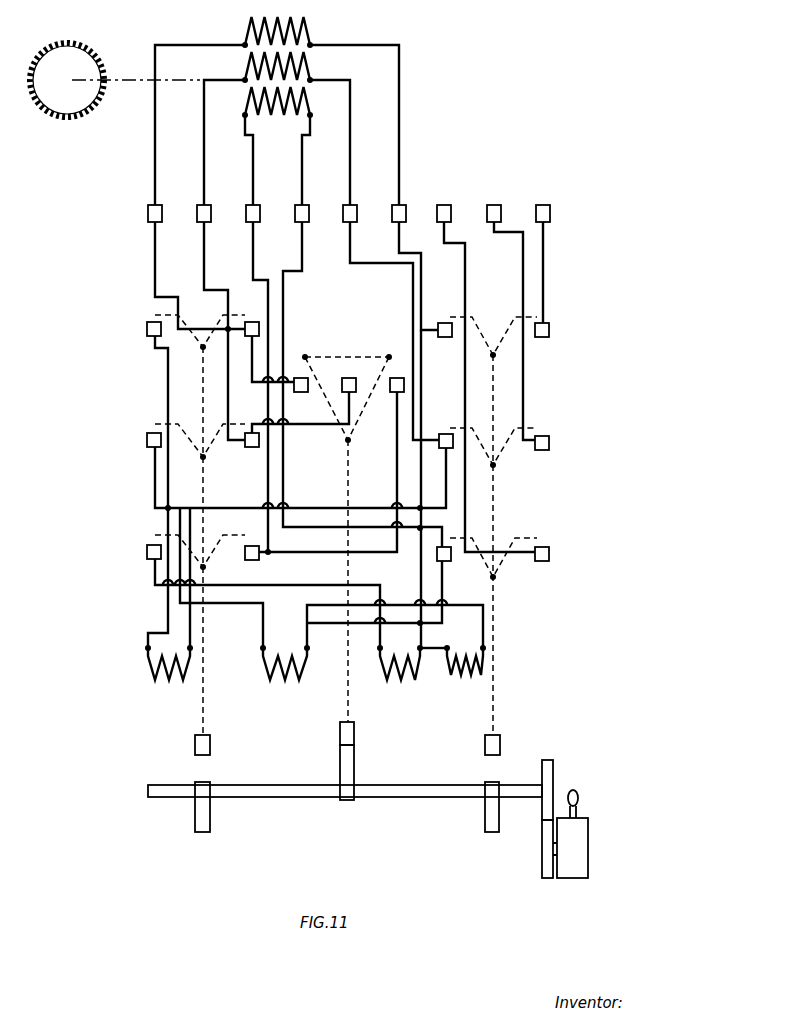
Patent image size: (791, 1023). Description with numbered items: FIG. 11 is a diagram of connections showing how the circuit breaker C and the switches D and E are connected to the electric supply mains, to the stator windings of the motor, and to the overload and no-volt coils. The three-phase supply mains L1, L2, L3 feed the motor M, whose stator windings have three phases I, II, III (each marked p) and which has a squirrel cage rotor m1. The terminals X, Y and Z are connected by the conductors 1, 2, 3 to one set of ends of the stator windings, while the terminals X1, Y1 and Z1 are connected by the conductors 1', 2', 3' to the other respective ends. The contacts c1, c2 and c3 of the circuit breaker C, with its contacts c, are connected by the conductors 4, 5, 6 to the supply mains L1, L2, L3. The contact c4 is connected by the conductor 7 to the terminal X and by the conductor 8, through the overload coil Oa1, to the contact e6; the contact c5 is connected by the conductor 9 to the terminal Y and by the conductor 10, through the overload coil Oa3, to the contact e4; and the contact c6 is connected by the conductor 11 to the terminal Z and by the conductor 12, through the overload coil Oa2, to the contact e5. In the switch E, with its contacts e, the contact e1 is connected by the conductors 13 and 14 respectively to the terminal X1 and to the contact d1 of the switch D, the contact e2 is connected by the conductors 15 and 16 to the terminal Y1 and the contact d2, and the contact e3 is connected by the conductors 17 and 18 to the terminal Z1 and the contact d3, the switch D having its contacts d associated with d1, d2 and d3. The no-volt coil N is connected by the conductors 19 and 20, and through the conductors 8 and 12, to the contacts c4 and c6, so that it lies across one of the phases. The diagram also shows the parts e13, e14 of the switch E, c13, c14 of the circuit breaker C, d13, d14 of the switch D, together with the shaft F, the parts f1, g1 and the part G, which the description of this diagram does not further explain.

The motor M is at (115, 65).
The squirrel cage rotor m1 is at (59, 71).
The stator winding phase I is at (310, 22).
The stator winding phase II is at (310, 66).
The stator winding phase III is at (310, 102).
The stator winding phase designation p is at (347, 48).
The conductor 1 is at (366, 125).
The conductor 1' is at (182, 125).
The conductor 2 is at (342, 142).
The conductor 2' is at (212, 142).
The conductor 3 is at (313, 160).
The conductor 3' is at (261, 160).
The terminal X1 is at (153, 210).
The terminal Y1 is at (196, 203).
The terminal Z1 is at (244, 203).
The terminal Z is at (301, 210).
The terminal Y is at (349, 210).
The terminal X is at (398, 210).
The supply main L1 is at (447, 199).
The supply main L2 is at (497, 199).
The supply main L3 is at (546, 199).
The conductor 4 is at (468, 268).
The conductor 5 is at (525, 360).
The conductor 6 is at (545, 275).
The conductor 7 is at (423, 266).
The conductor 8 is at (425, 365).
The conductor 9 is at (412, 304).
The conductor 10 is at (168, 460).
The conductor 11 is at (285, 308).
The conductor 12 is at (153, 493).
The conductor 13 is at (158, 289).
The conductor 14 is at (250, 386).
The conductor 15 is at (206, 262).
The conductor 16 is at (305, 430).
The conductor 17 is at (254, 250).
The conductor 18 is at (396, 462).
The conductor 19 is at (433, 650).
The conductor 20 is at (485, 620).
The contact of switch E e is at (158, 314).
The contact e1 is at (246, 343).
The contact e2 is at (246, 452).
The contact e3 is at (246, 560).
The contact e4 is at (147, 331).
The contact e5 is at (147, 443).
The contact e6 is at (147, 560).
The switch E is at (203, 383).
The contactor armature e13 is at (212, 748).
The cam e14 is at (198, 818).
The contact of circuit breaker C c is at (477, 327).
The contact c1 is at (550, 555).
The contact c2 is at (550, 443).
The contact c3 is at (548, 330).
The contact c4 is at (442, 322).
The contact c5 is at (444, 432).
The contact c6 is at (445, 562).
The circuit breaker C is at (497, 393).
The contactor armature c13 is at (500, 745).
The cam c14 is at (490, 818).
The contact of switch D d is at (354, 357).
The contact d1 is at (301, 393).
The contact d2 is at (352, 390).
The contact d3 is at (397, 376).
The switch D is at (345, 462).
The contactor armature d13 is at (355, 735).
The cam d14 is at (348, 800).
The overload coil Oa1 is at (399, 673).
The overload coil Oa2 is at (285, 673).
The overload coil Oa3 is at (169, 673).
The no-volt coil N is at (465, 671).
The cam shaft F is at (393, 800).
The gear f1 is at (556, 772).
The gear g1 is at (545, 862).
The drive motor G is at (580, 798).